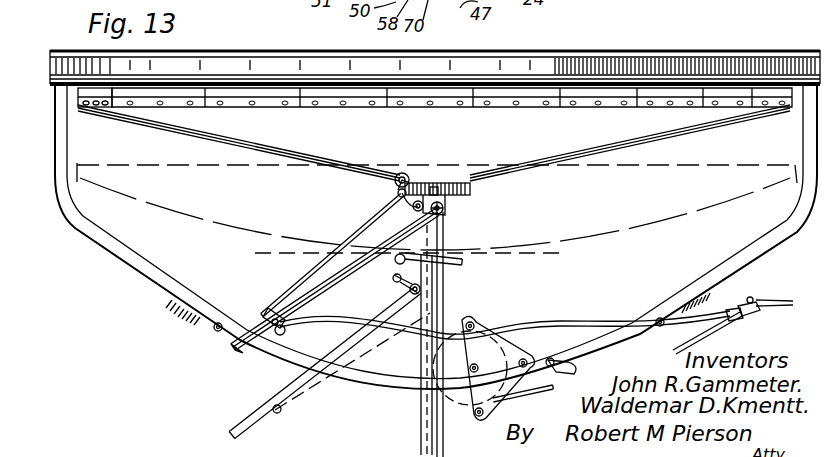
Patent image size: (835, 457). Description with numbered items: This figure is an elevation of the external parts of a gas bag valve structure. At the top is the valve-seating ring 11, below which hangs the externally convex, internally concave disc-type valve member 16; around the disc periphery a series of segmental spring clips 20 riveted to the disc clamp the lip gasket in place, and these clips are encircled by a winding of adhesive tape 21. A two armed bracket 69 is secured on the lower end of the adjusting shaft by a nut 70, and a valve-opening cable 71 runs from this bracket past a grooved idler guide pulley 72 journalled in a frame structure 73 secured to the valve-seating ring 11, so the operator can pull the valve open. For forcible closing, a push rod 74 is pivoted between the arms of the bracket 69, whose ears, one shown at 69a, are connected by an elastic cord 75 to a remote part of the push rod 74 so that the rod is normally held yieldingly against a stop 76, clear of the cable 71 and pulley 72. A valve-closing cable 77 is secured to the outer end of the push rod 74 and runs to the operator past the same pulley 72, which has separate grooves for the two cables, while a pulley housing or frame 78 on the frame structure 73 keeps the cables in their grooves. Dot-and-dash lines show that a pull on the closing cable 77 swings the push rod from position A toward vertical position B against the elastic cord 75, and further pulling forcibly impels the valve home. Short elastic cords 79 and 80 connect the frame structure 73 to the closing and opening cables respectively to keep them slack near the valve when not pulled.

The valve-seating ring 11 is at (745, 51).
The disc-type valve member 16 is at (685, 127).
The segmental spring clips 20 is at (333, 93).
The adhesive tape 21 is at (152, 93).
The two armed bracket 69 is at (455, 198).
The ear or rigid lateral extension 69a is at (413, 218).
The nut 70 is at (456, 191).
The valve-opening cable 71 is at (444, 245).
The grooved idler guide pulley 72 is at (453, 333).
The frame structure 73 is at (761, 258).
The push rod 74 is at (347, 275).
The elastic cord 75 is at (310, 272).
The stop 76 is at (397, 212).
The valve-closing cable 77 is at (312, 321).
The pulley housing or frame 78 is at (488, 340).
The elastic cord 79 is at (742, 306).
The elastic cord 80 is at (580, 368).
The push rod position A is at (297, 378).
The vertical push rod position B is at (421, 428).